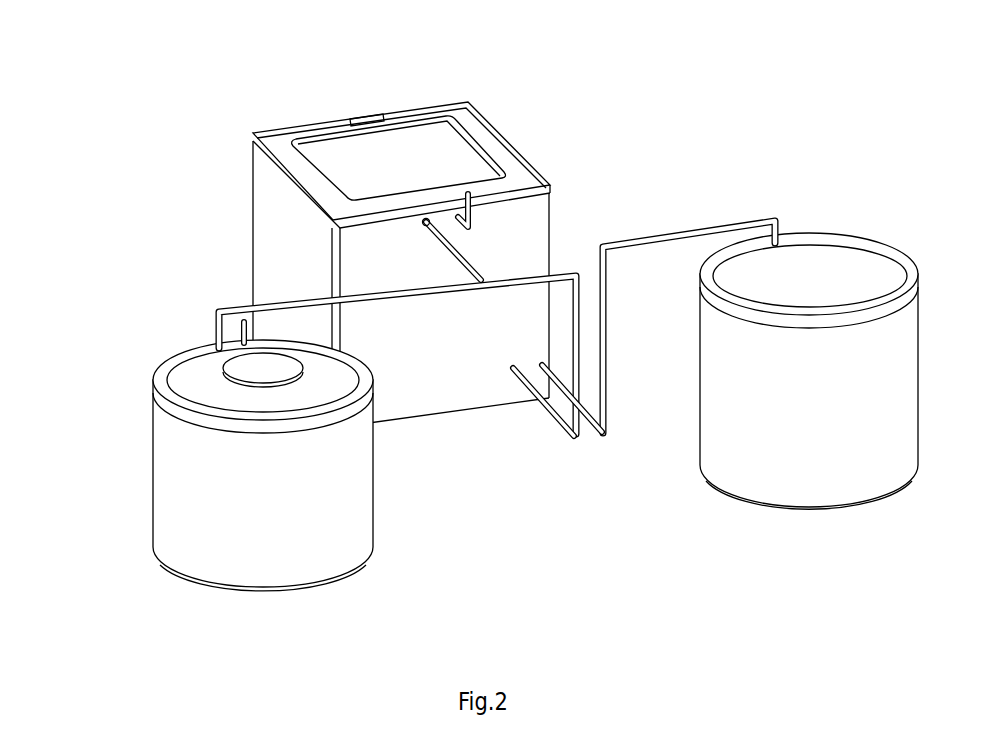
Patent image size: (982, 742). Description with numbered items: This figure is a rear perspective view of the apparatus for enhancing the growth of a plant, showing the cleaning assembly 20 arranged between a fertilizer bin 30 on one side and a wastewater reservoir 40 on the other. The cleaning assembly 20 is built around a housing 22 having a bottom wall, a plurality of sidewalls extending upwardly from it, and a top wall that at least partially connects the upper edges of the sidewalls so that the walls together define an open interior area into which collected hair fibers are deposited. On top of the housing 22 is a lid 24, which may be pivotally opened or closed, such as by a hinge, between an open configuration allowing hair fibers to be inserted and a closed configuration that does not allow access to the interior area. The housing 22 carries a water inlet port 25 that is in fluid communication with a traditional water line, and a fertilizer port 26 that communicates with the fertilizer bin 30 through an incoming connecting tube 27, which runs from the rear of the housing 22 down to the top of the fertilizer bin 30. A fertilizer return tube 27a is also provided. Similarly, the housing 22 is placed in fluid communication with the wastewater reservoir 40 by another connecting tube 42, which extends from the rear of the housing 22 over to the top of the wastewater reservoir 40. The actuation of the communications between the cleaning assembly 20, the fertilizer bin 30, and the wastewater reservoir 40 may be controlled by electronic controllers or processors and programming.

The cleaning assembly 20 is at (488, 308).
The housing 22 is at (272, 213).
The lid 24 is at (447, 138).
The water inlet port 25 is at (472, 215).
The fertilizer port 26 is at (423, 220).
The incoming connecting tube 27 is at (292, 300).
The fertilizer return tube 27a is at (545, 405).
The fertilizer bin 30 is at (128, 502).
The wastewater reservoir 40 is at (908, 203).
The connecting tube 42 is at (738, 218).